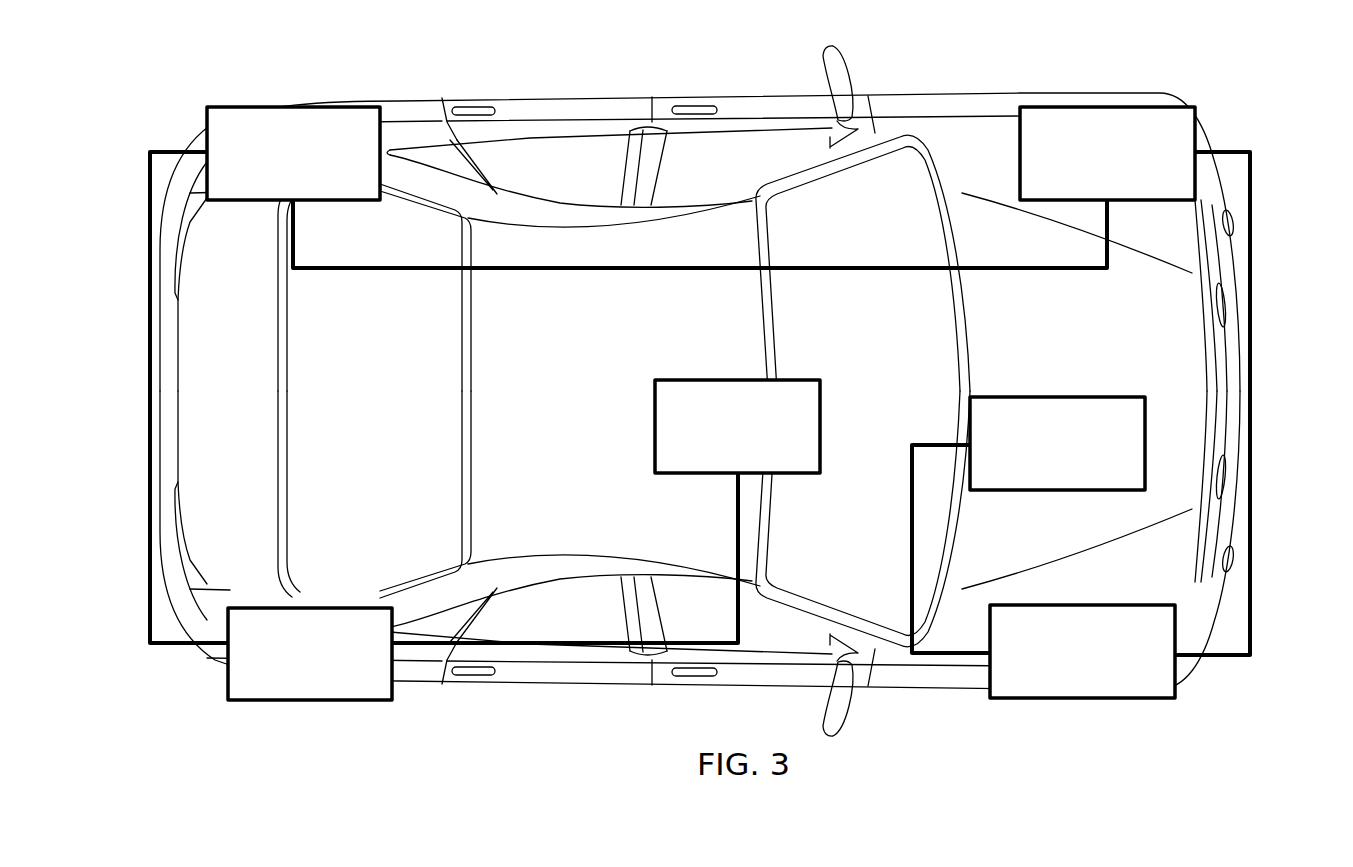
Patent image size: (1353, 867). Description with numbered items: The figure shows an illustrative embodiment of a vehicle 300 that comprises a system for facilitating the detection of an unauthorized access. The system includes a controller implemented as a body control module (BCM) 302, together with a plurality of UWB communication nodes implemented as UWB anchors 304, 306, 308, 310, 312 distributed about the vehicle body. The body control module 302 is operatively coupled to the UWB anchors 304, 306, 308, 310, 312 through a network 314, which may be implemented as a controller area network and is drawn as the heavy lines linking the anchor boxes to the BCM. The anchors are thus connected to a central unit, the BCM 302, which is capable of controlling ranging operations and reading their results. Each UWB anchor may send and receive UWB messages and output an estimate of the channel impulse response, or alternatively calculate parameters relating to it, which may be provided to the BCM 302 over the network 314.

The vehicle 300 is at (581, 96).
The body control module (BCM) 302 is at (1044, 458).
The UWB anchor 304 is at (1069, 665).
The UWB anchor 306 is at (1089, 168).
The UWB anchor 308 is at (283, 168).
The UWB anchor 310 is at (301, 670).
The UWB anchor 312 is at (726, 440).
The network 314 is at (149, 378).